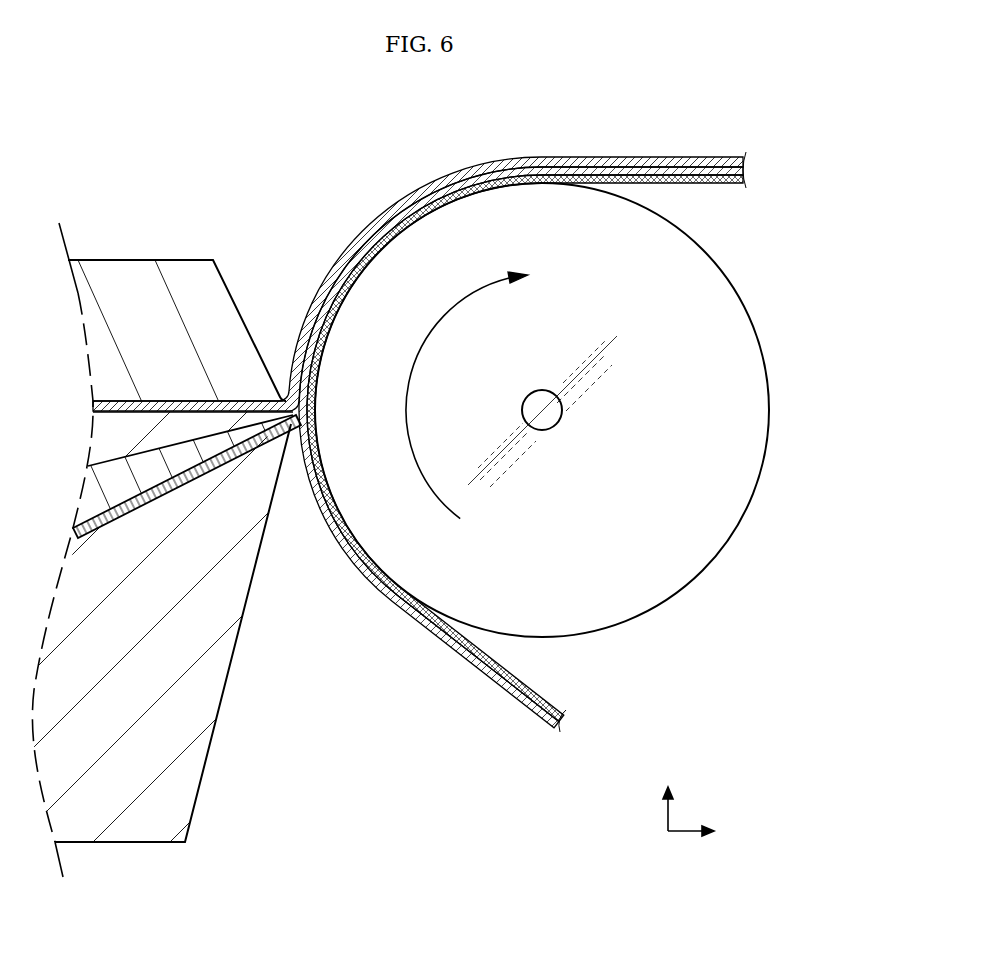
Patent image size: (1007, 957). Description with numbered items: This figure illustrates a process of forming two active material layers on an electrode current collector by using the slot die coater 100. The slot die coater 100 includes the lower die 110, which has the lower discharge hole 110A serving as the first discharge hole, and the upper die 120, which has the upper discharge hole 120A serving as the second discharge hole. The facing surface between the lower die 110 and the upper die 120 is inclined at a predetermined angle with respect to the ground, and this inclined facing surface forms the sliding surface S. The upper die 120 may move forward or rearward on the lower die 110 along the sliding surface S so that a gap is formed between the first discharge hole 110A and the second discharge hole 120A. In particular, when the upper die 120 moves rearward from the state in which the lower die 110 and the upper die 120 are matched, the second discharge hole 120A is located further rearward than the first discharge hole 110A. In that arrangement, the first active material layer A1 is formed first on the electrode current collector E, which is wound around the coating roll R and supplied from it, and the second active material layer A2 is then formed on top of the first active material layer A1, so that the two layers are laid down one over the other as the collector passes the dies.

The slot die coater 100 is at (165, 217).
The upper die 120 is at (212, 259).
The upper discharge hole 120A is at (225, 401).
The lower die 110 is at (247, 670).
The lower discharge hole 110A is at (222, 467).
The sliding surface S is at (128, 457).
The coating roll R is at (769, 407).
The first active material layer A1 is at (675, 172).
The second active material layer A2 is at (629, 161).
The electrode current collector E is at (512, 686).